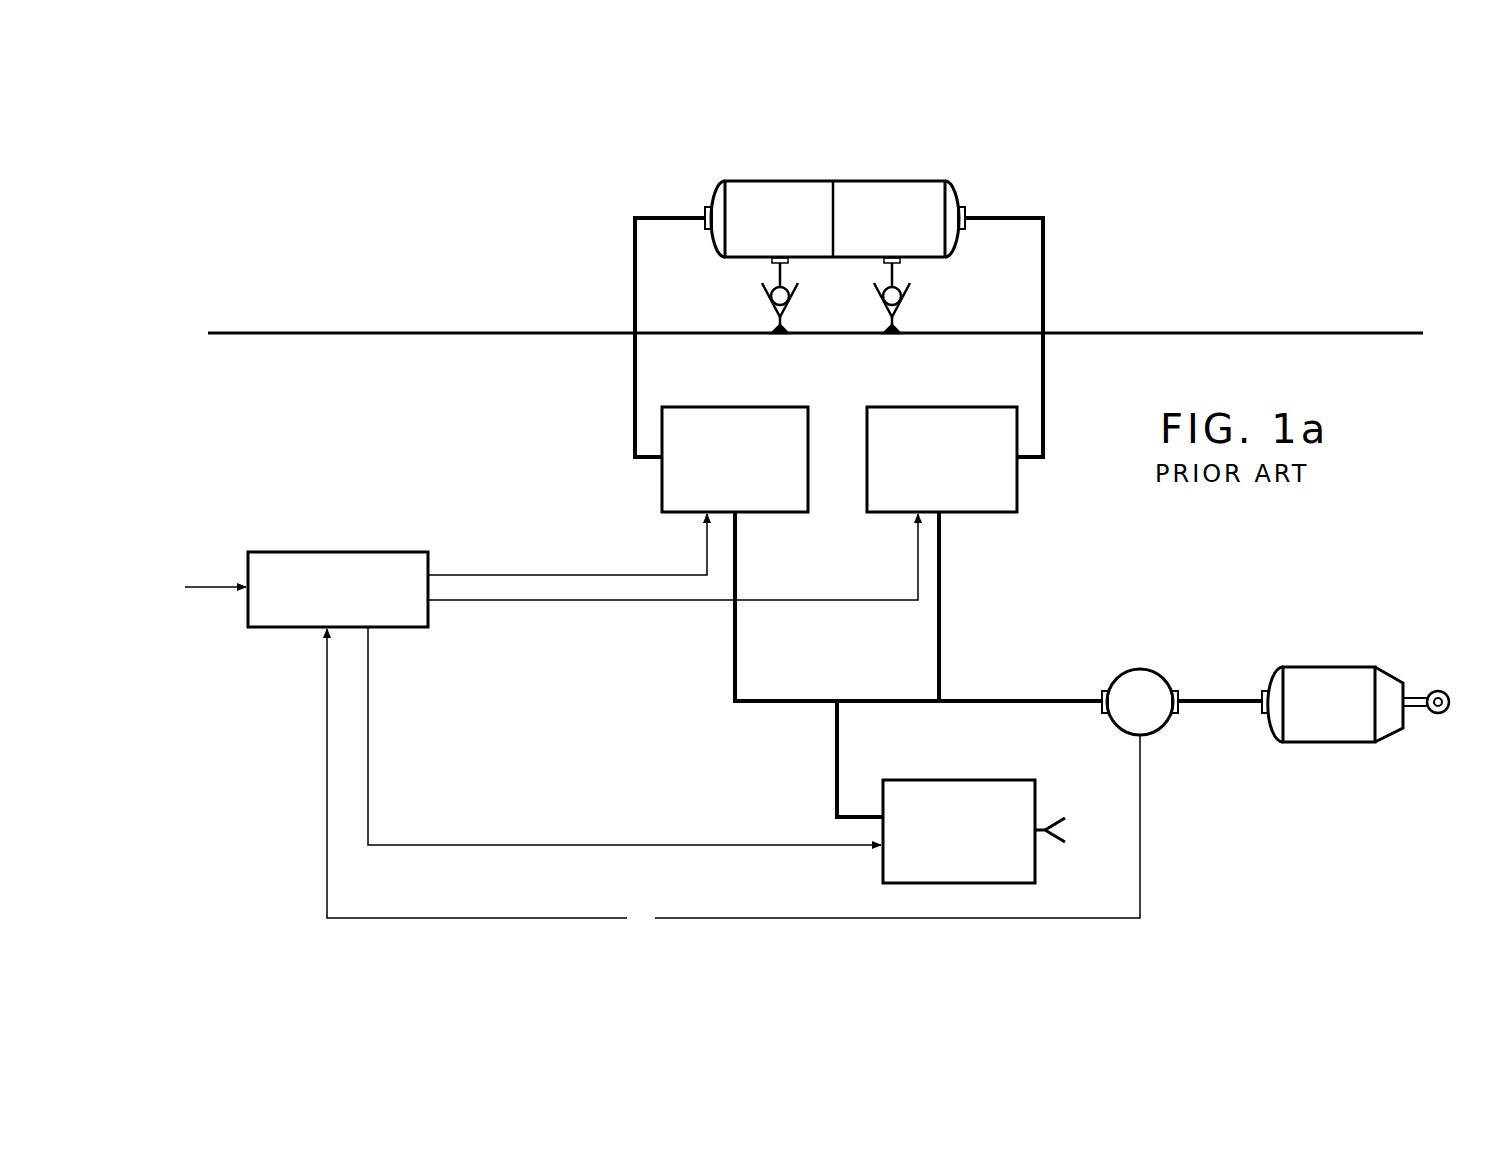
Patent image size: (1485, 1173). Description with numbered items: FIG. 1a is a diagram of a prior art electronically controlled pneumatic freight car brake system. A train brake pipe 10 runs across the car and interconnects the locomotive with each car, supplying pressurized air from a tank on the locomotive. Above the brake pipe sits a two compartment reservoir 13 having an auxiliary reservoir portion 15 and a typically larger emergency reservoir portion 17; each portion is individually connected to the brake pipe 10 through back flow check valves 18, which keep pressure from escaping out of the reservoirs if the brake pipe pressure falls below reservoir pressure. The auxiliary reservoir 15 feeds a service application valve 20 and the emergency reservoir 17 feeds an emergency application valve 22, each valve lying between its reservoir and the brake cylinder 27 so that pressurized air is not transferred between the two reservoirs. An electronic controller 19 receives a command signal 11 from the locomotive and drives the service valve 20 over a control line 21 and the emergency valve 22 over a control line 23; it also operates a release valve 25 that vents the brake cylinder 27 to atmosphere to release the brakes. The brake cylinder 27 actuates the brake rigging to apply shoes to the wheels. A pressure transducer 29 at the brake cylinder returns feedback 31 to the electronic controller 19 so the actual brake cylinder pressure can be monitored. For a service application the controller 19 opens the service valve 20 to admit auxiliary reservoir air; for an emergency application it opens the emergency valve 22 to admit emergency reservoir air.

The brake pipe 10 is at (1245, 333).
The command signal 11 is at (205, 590).
The two compartment reservoir 13 is at (802, 184).
The auxiliary reservoir portion 15 is at (788, 181).
The emergency reservoir portion 17 is at (885, 181).
The back flow check valves 18 is at (770, 299).
The electronic controller 19 is at (311, 552).
The service application valve 20 is at (741, 407).
The service control line 21 is at (607, 575).
The emergency application valve 22 is at (941, 407).
The emergency control line 23 is at (590, 600).
The release valve 25 is at (970, 780).
The brake cylinder 27 is at (1337, 667).
The pressure transducer 29 is at (1131, 670).
The feedback 31 is at (1140, 872).